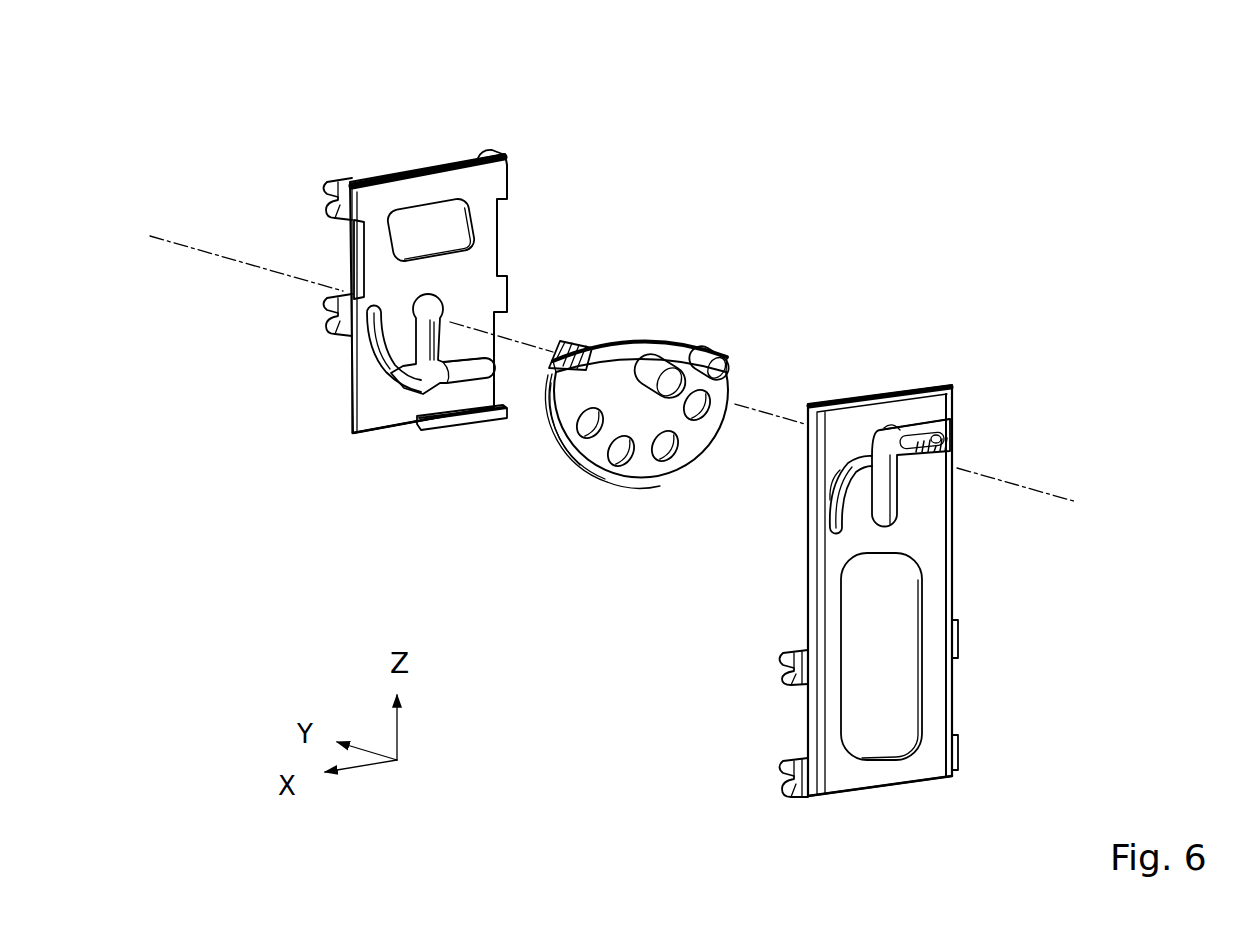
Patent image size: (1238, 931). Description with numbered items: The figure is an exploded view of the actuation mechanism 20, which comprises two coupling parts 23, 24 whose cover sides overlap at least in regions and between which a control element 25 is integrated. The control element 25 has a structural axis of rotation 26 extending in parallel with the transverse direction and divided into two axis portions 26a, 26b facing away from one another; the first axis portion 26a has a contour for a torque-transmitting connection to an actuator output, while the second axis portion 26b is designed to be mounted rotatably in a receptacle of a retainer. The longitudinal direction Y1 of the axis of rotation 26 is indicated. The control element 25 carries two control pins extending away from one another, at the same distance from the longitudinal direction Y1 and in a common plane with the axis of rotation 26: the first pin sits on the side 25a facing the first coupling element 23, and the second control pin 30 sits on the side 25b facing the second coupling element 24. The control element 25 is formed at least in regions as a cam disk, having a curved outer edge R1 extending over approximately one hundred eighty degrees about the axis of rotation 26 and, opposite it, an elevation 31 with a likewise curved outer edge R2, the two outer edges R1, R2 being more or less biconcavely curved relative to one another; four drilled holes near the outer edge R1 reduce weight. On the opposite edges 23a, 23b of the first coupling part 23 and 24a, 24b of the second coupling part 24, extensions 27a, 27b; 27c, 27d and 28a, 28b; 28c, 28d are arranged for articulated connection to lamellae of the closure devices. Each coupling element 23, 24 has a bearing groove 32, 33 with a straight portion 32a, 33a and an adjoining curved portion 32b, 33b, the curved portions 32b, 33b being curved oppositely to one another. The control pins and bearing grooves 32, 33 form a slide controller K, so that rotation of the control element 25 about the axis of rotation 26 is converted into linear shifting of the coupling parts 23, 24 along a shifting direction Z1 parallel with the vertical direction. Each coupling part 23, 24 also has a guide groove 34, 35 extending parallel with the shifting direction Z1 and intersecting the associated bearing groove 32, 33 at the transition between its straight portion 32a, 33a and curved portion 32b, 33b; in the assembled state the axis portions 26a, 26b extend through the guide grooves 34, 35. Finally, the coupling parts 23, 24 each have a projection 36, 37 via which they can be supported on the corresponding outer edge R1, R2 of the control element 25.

The actuation mechanism 20 is at (996, 130).
The first coupling element 23 is at (410, 173).
The edge of first coupling part 23a is at (347, 264).
The edge of first coupling part 23b is at (508, 222).
The second coupling element 24 is at (930, 528).
The edge of second coupling part 24a is at (806, 553).
The edge of second coupling part 24b is at (958, 497).
The control element 25 is at (663, 343).
The side of control element facing first coupling element 25a is at (547, 434).
The side of control element facing second coupling element 25b is at (624, 421).
The axis of rotation 26 is at (646, 343).
The first axis portion 26a is at (567, 340).
The second axis portion 26b is at (683, 343).
The extension 27a is at (330, 178).
The extension 27b is at (323, 297).
The extension 27c is at (483, 157).
The extension 27d is at (507, 287).
The extension 28a is at (782, 680).
The extension 28b is at (782, 797).
The extension 28c is at (957, 635).
The extension 28d is at (957, 750).
The second control pin 30 is at (733, 370).
The elevation 31 is at (618, 369).
The bearing groove 32 is at (393, 383).
The straight portion 32a is at (479, 421).
The curved portion 32b is at (370, 370).
The bearing groove 33 is at (908, 390).
The straight portion 33a is at (950, 427).
The curved portion 33b is at (830, 460).
The guide groove 34 is at (440, 318).
The guide groove 35 is at (892, 527).
The projection 36 is at (437, 432).
The projection 37 is at (885, 448).
The slide controller K is at (336, 526).
The longitudinal direction of the axis of rotation Y1 is at (615, 367).
The shifting direction Z1 is at (508, 622).
The curved outer edge R1 is at (599, 488).
The curved outer edge of elevation R2 is at (622, 337).